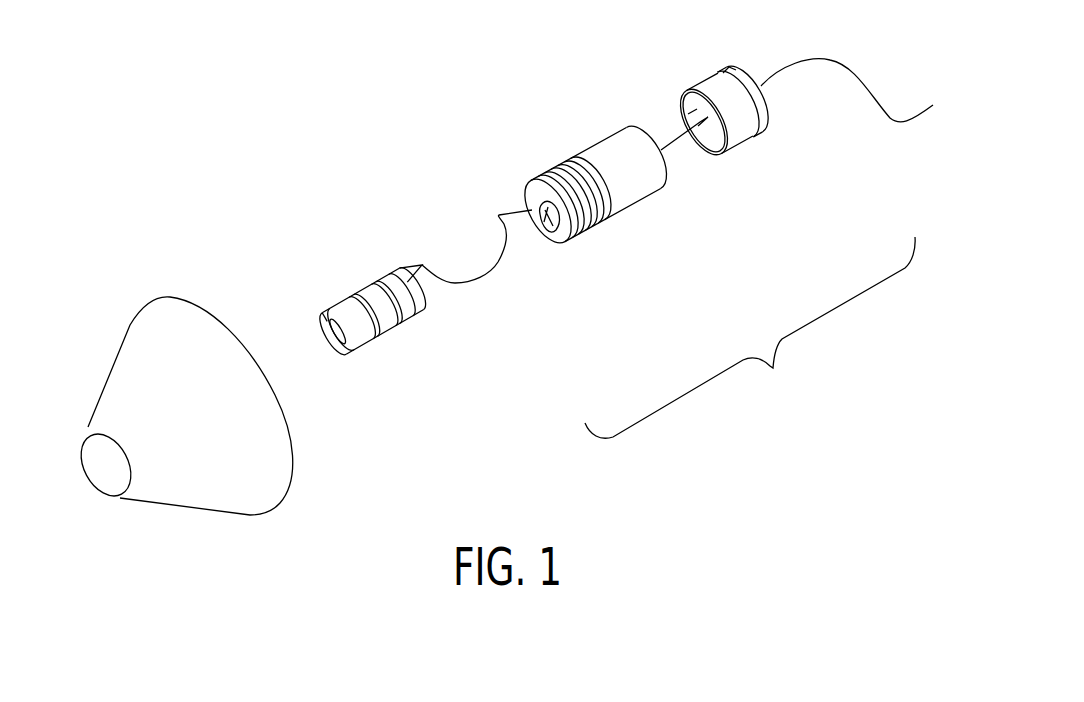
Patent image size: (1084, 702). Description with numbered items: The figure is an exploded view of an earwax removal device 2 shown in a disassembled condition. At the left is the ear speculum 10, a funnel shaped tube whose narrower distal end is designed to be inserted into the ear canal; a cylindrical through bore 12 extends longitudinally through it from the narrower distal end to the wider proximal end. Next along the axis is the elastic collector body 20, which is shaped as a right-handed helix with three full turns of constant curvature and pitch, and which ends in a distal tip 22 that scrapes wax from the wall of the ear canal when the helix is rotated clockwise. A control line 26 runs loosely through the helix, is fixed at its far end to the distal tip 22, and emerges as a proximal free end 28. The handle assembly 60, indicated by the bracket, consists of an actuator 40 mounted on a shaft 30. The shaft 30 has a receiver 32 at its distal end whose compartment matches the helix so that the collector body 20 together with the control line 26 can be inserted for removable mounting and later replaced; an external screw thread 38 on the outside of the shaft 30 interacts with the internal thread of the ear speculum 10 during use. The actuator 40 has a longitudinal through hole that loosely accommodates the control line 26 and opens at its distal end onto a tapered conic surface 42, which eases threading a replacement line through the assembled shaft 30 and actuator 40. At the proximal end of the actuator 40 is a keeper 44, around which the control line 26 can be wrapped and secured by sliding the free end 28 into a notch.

The earwax removal device 2 is at (372, 83).
The ear speculum 10 is at (218, 500).
The through bore 12 is at (88, 427).
The collector body 20 is at (381, 332).
The distal tip 22 is at (323, 308).
The control line 26 is at (487, 276).
The free end 28 is at (908, 122).
The shaft 30 is at (637, 187).
The receiver 32 is at (558, 229).
The external screw thread 38 is at (563, 170).
The actuator 40 is at (741, 128).
The conic surface 42 is at (690, 100).
The keeper 44 is at (732, 69).
The handle assembly 60 is at (750, 337).